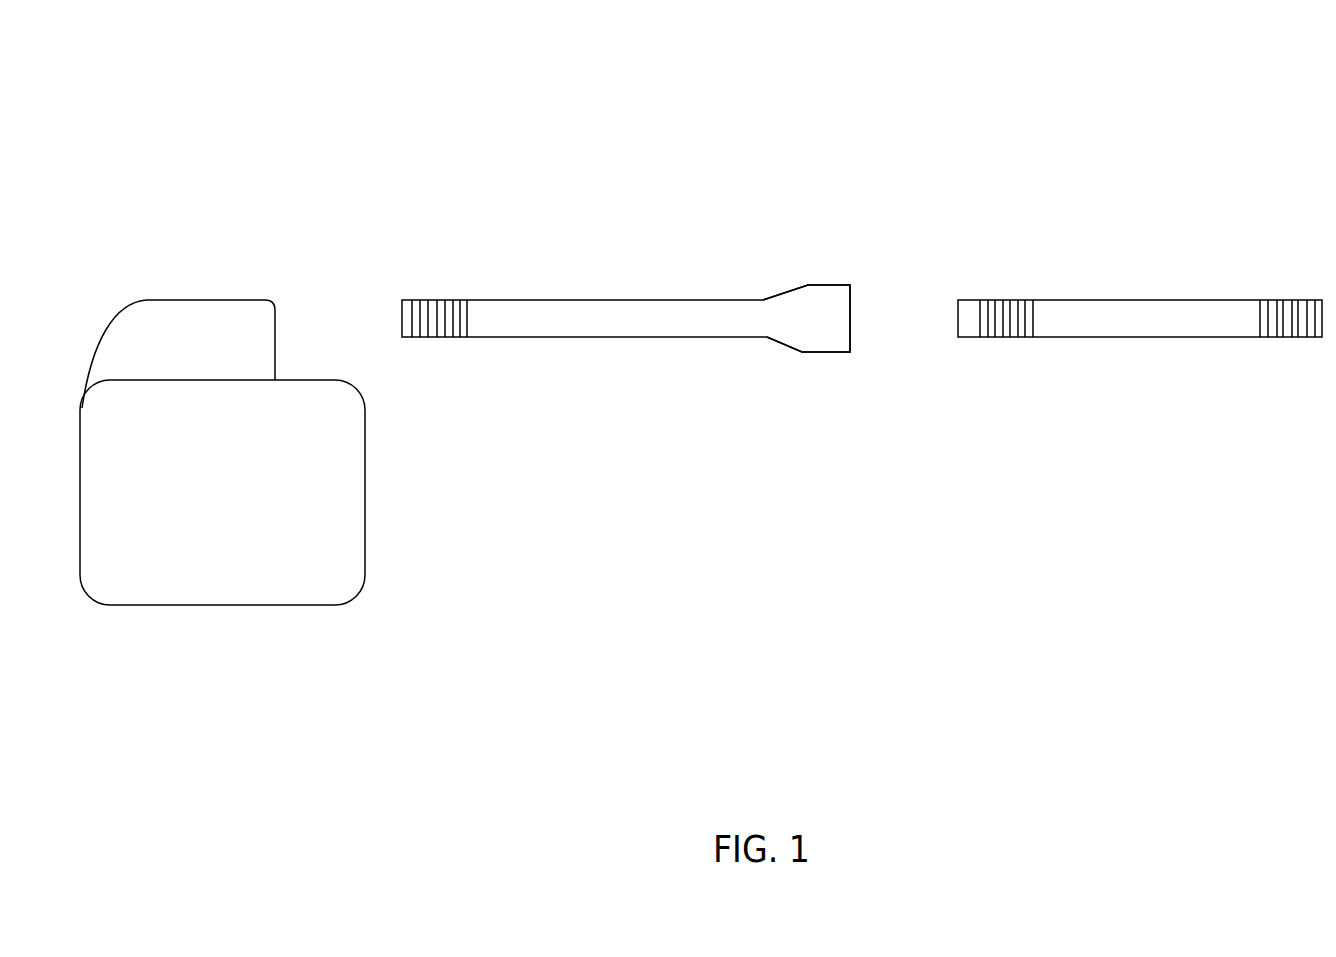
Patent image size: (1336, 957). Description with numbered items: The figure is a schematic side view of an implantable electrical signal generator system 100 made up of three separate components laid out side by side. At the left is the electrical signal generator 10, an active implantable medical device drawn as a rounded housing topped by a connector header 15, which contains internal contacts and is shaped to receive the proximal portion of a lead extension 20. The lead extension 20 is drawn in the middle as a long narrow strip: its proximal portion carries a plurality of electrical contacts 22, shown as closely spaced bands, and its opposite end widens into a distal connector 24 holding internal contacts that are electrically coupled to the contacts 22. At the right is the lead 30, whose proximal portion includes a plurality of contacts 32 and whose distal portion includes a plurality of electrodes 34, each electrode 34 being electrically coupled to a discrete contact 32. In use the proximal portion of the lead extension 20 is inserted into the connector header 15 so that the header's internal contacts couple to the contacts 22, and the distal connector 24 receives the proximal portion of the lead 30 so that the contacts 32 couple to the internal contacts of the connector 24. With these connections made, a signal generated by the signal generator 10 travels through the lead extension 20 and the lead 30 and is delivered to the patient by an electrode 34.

The implantable electrical signal generator system 100 is at (924, 126).
The electrical signal generator 10 is at (237, 637).
The connector header 15 is at (213, 333).
The lead extension 20 is at (624, 377).
The electrical contacts 22 is at (462, 306).
The distal connector 24 is at (813, 308).
The lead 30 is at (1135, 392).
The contacts 32 is at (1029, 306).
The electrodes 34 is at (1311, 306).